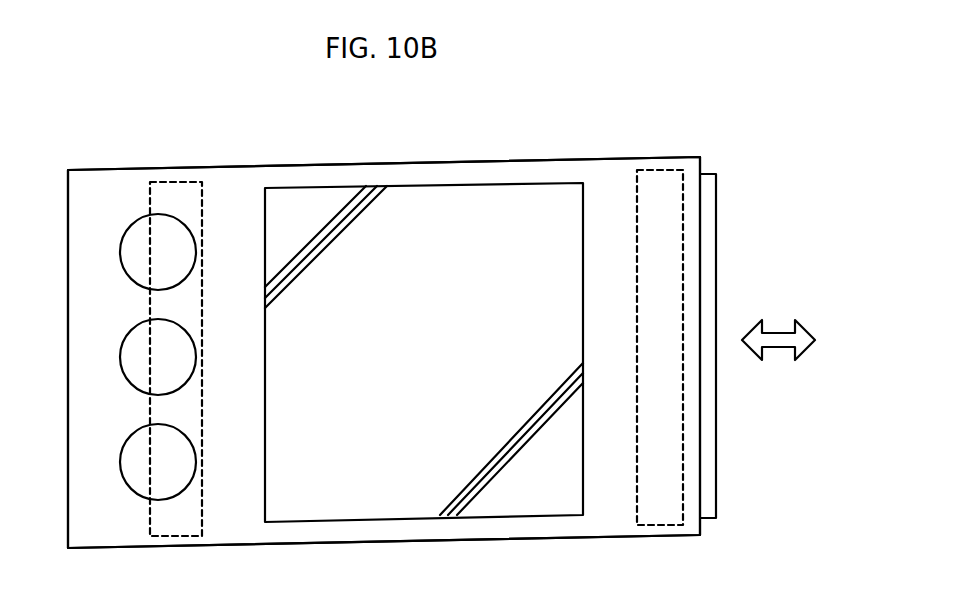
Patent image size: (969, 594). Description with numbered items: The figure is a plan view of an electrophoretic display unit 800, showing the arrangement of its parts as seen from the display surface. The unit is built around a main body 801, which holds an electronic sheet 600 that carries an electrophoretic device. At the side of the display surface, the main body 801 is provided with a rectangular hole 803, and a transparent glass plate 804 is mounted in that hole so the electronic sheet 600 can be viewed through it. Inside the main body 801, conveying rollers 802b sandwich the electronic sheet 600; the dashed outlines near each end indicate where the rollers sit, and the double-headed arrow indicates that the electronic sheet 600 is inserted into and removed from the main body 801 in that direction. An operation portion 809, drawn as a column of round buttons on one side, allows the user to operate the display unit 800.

The electrophoretic display unit 800 is at (600, 88).
The main body 801 is at (237, 182).
The electronic sheet 600 is at (717, 217).
The rectangular hole 803 is at (319, 187).
The transparent glass plate 804 is at (440, 195).
The conveying rollers 802b is at (173, 172).
The operation portion 809 is at (128, 214).